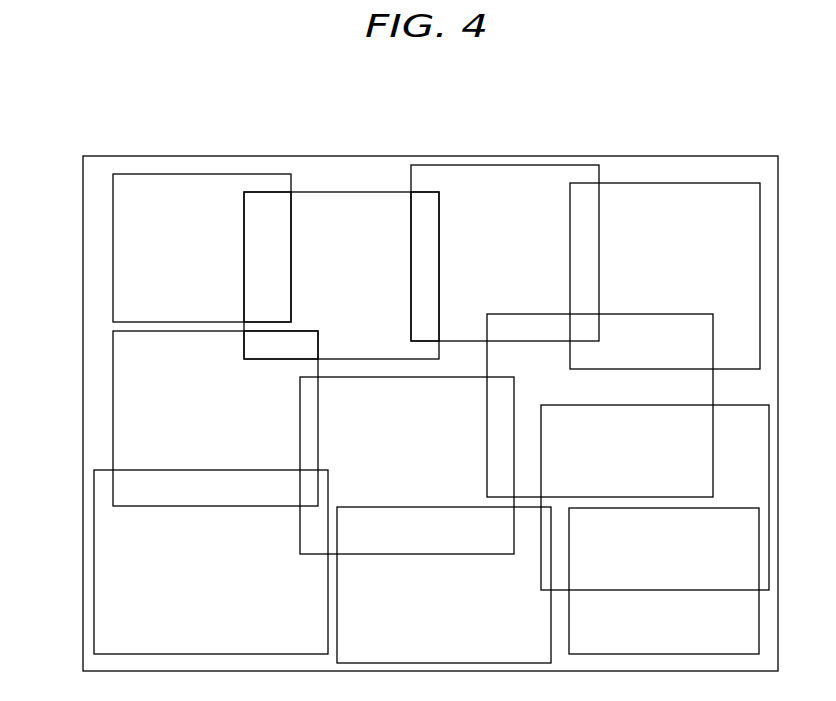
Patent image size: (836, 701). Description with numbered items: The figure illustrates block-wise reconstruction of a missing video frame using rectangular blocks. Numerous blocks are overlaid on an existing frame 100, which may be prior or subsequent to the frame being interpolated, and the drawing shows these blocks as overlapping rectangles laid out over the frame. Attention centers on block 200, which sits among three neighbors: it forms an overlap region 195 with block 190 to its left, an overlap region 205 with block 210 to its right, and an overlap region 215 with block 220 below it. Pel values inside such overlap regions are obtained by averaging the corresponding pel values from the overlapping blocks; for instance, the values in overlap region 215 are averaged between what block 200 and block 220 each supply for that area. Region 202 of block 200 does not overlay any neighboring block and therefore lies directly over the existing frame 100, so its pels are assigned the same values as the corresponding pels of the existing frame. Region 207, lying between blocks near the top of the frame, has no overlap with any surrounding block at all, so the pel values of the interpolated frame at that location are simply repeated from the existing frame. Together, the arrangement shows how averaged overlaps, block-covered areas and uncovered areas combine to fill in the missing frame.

The existing frame 100 is at (194, 149).
The block 190 is at (229, 187).
The overlap region 195 is at (284, 268).
The block 200 is at (360, 193).
The region of block 202 is at (367, 286).
The overlap region 205 is at (423, 198).
The region 207 is at (325, 168).
The block 210 is at (475, 178).
The overlap region 215 is at (299, 356).
The block 220 is at (125, 377).